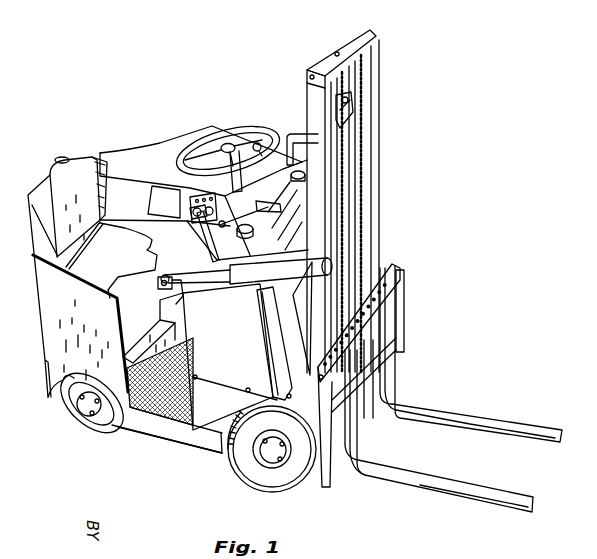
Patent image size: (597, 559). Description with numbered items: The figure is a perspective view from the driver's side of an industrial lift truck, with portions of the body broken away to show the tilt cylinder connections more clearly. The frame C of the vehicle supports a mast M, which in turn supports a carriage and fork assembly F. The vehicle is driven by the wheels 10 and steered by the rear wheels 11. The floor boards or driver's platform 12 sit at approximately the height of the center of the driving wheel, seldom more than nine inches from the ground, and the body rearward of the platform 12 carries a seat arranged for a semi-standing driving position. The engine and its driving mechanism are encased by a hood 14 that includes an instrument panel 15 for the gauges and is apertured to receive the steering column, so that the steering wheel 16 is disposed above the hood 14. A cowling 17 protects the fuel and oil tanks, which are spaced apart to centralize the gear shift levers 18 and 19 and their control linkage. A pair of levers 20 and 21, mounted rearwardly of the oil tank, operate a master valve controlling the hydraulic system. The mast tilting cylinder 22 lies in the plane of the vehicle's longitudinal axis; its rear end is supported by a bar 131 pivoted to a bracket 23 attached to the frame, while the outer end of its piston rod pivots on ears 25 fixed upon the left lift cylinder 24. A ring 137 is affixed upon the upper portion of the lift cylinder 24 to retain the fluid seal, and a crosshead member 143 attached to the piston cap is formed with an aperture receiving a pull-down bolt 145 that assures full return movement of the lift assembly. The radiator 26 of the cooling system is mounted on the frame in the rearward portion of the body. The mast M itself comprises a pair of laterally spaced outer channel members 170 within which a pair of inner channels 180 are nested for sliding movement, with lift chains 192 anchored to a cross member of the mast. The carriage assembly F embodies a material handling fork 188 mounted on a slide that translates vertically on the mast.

The wheels 10 is at (273, 473).
The rear wheels 11 is at (106, 428).
The floor boards or driver's platform 12 is at (180, 434).
The hood 14 is at (145, 156).
The instrument panel 15 is at (180, 191).
The steering wheel 16 is at (229, 131).
The cowling 17 is at (271, 239).
The gear shift lever 18 is at (250, 215).
The gear shift lever 19 is at (261, 200).
The lever 20 is at (199, 216).
The lever 21 is at (209, 236).
The mast tilting cylinder 22 is at (257, 274).
The bracket 23 is at (163, 294).
The lift cylinder 24 is at (362, 223).
The ears 25 is at (240, 365).
The radiator 26 is at (92, 155).
The bar 131 is at (189, 283).
The ring 137 is at (111, 260).
The crosshead member 143 is at (353, 112).
The pull-down bolt 145 is at (352, 63).
The outer channel members 170 is at (310, 100).
The inner channels 180 is at (362, 83).
The material handling fork 188 is at (432, 482).
The lift chains 192 is at (362, 170).
The frame C is at (146, 428).
The carriage and fork assembly F is at (450, 400).
The mast M is at (352, 201).